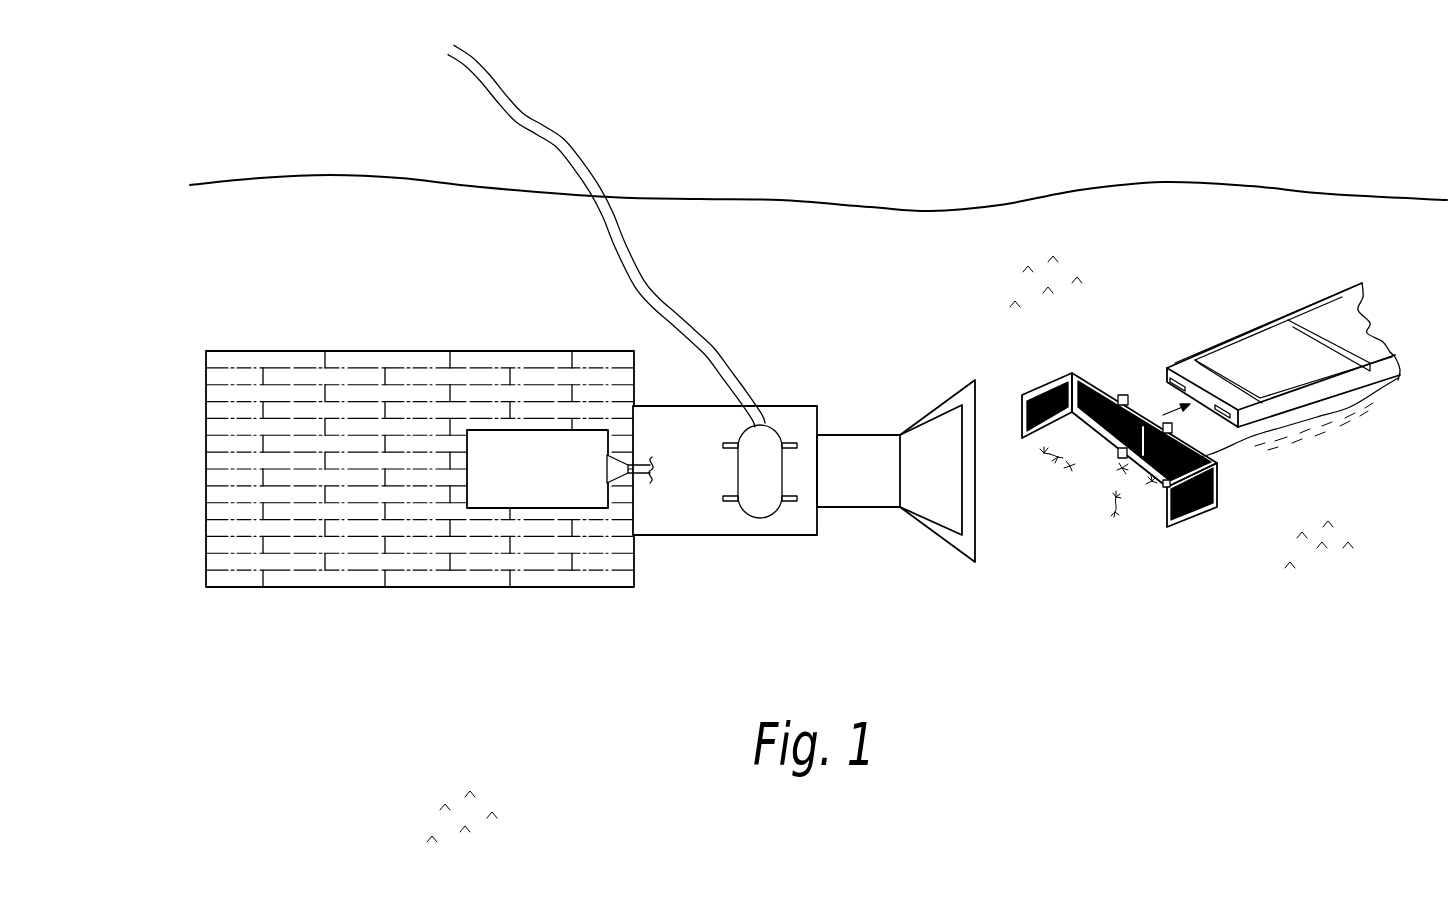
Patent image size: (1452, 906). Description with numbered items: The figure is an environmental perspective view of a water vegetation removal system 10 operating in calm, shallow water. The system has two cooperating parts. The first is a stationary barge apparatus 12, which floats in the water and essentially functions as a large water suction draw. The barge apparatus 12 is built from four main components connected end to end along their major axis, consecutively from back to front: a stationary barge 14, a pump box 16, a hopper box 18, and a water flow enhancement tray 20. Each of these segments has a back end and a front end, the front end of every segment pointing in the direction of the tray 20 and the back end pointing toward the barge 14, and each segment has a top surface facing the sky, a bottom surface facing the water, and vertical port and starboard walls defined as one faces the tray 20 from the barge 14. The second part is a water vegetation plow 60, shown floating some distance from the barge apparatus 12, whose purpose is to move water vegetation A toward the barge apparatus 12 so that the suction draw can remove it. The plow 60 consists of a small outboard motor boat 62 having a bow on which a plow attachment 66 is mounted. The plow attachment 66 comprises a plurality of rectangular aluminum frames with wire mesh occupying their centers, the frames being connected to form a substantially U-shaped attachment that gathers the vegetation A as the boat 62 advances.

The water vegetation removal system 10 is at (810, 174).
The barge apparatus 12 is at (420, 490).
The stationary barge 14 is at (303, 350).
The pump box 16 is at (692, 537).
The hopper box 18 is at (853, 432).
The water flow enhancement tray 20 is at (943, 497).
The water vegetation plow 60 is at (1211, 467).
The outboard motor boat 62 is at (1190, 347).
The plow attachment 66 is at (1048, 380).
The water vegetation A is at (1080, 500).